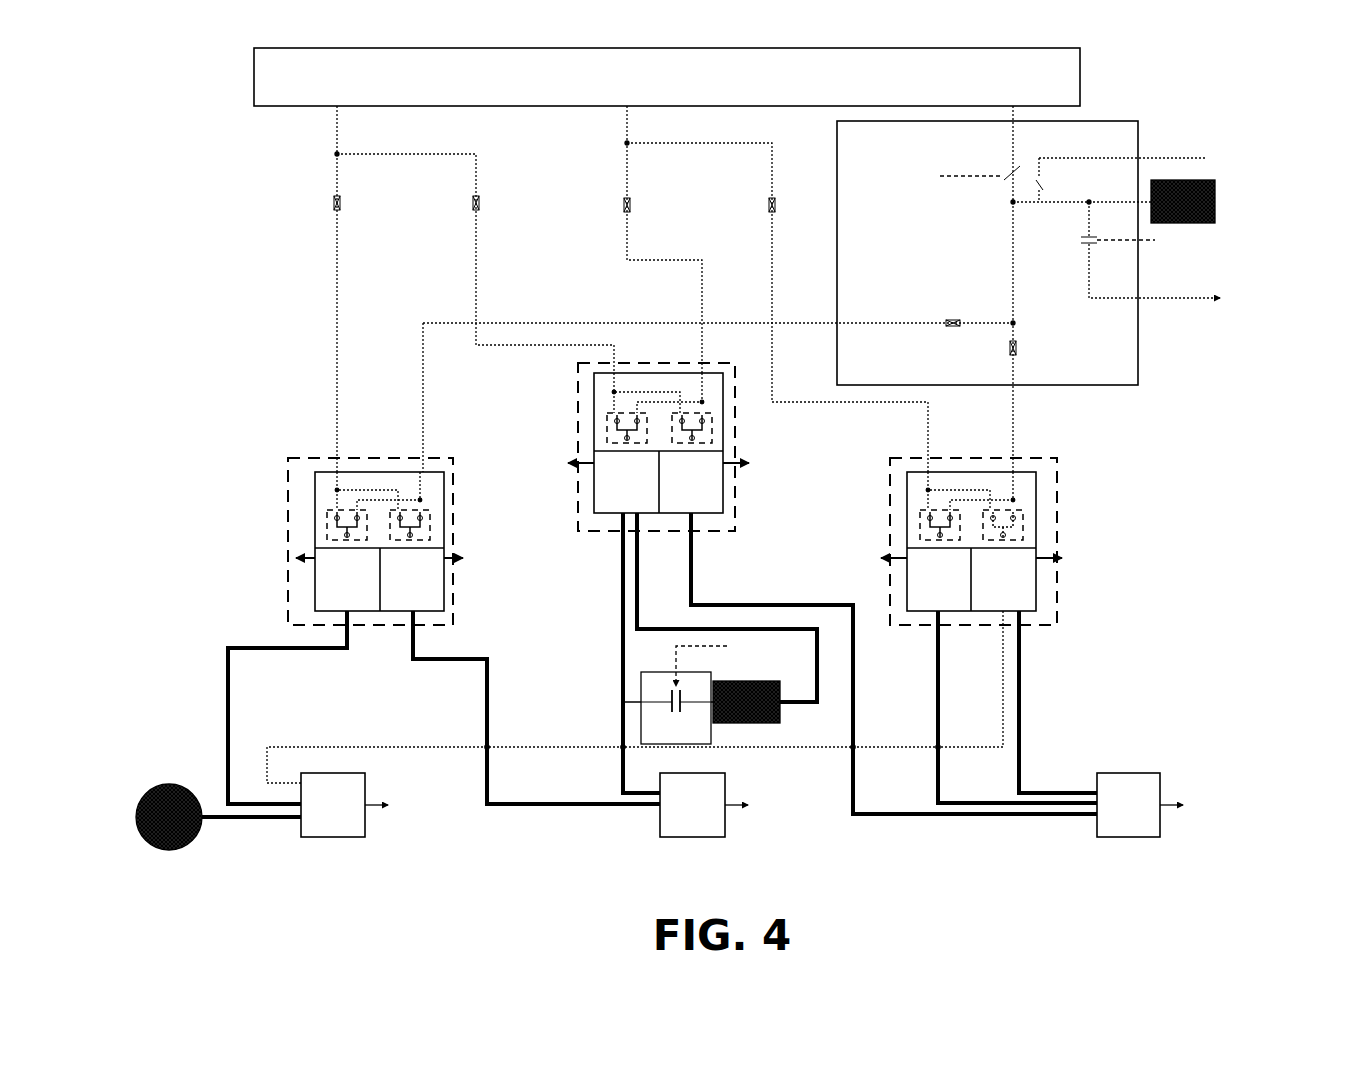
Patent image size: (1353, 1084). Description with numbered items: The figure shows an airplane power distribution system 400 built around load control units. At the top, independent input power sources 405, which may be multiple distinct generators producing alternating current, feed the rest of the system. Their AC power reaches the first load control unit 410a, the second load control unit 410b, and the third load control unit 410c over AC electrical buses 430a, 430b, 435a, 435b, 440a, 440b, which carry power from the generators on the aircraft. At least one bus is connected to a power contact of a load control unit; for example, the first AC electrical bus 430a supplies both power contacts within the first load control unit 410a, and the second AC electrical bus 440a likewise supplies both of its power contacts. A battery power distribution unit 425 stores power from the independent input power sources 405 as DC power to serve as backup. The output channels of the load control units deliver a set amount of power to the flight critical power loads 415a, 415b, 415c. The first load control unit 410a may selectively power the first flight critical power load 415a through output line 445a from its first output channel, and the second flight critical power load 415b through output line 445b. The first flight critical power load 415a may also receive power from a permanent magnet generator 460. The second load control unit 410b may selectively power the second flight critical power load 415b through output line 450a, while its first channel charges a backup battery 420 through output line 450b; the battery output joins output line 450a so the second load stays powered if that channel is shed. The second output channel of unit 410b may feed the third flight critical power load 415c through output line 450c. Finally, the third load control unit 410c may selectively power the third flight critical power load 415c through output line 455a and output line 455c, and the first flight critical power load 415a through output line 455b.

The airplane power distribution system 400 is at (150, 146).
The independent input power sources 405 is at (882, 91).
The first load control unit 410a is at (315, 520).
The second load control unit 410b is at (594, 425).
The third load control unit 410c is at (1036, 518).
The first flight critical power load 415a is at (348, 838).
The second flight critical power load 415b is at (709, 838).
The third flight critical power load 415c is at (1145, 838).
The backup battery 420 is at (641, 732).
The battery power distribution unit 425 is at (1138, 145).
The first AC electrical bus 430a is at (337, 283).
The AC electrical bus 430b is at (476, 268).
The AC electrical bus 435a is at (627, 235).
The AC electrical bus 435b is at (772, 257).
The second AC electrical bus 440a is at (800, 322).
The AC electrical bus 440b is at (1015, 405).
The output line 445a is at (228, 688).
The output line 445b is at (487, 693).
The output line 450a is at (623, 638).
The output line 450b is at (637, 576).
The output line 450c is at (691, 595).
The output line 455a is at (938, 718).
The output line 455b is at (1003, 735).
The output line 455c is at (1019, 760).
The permanent magnet generator 460 is at (167, 851).